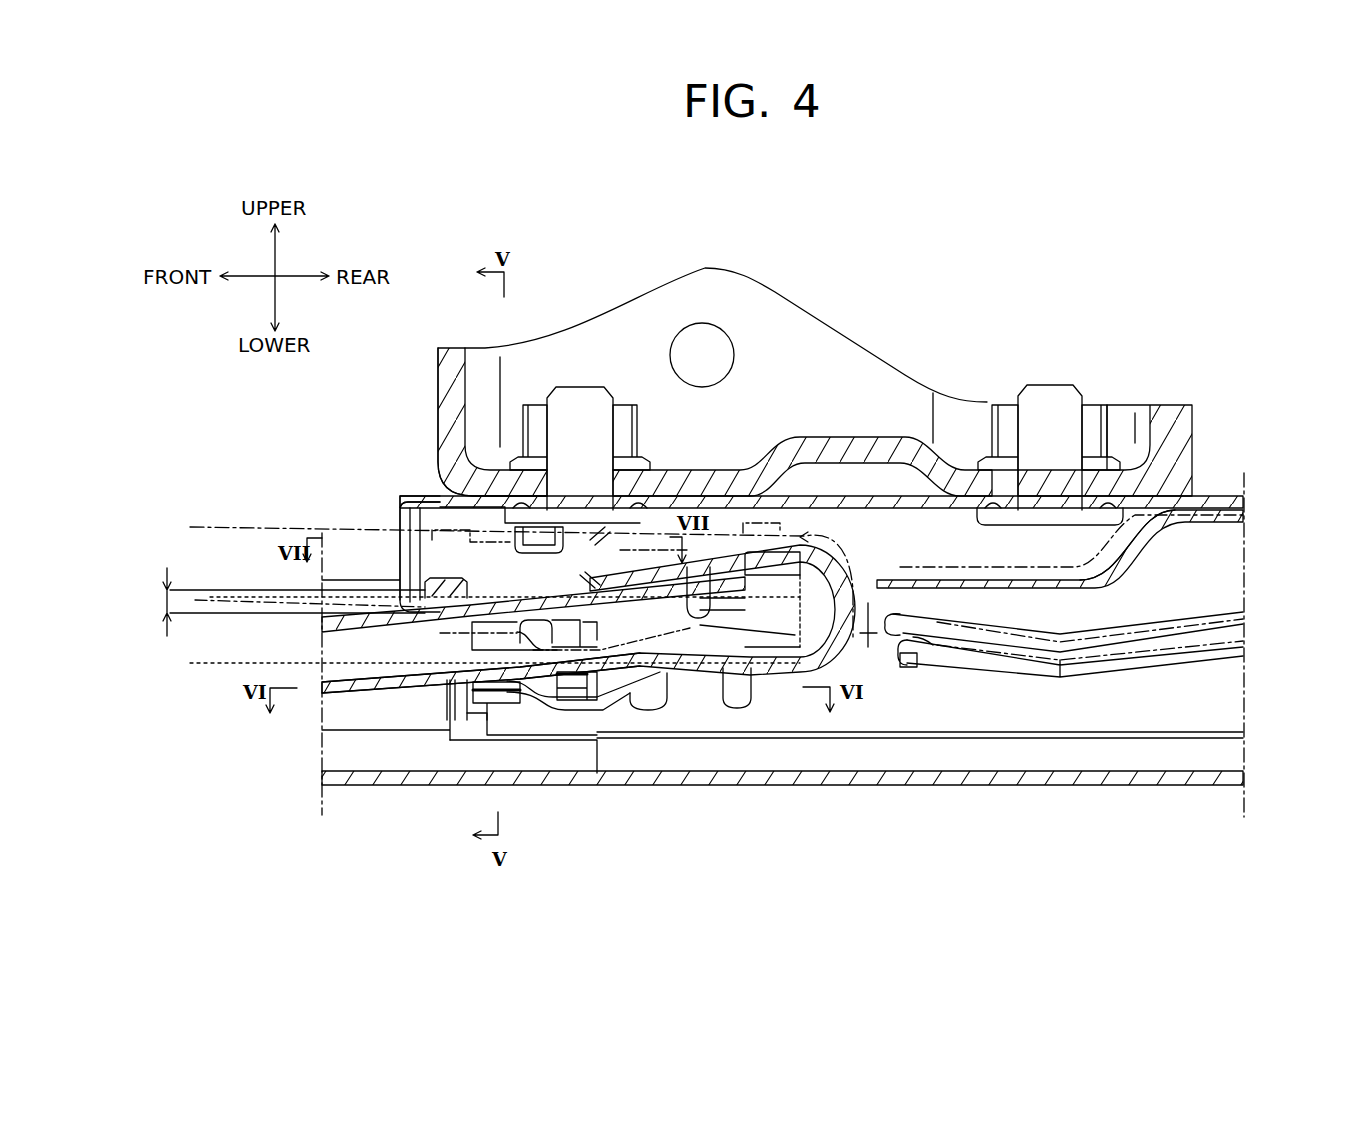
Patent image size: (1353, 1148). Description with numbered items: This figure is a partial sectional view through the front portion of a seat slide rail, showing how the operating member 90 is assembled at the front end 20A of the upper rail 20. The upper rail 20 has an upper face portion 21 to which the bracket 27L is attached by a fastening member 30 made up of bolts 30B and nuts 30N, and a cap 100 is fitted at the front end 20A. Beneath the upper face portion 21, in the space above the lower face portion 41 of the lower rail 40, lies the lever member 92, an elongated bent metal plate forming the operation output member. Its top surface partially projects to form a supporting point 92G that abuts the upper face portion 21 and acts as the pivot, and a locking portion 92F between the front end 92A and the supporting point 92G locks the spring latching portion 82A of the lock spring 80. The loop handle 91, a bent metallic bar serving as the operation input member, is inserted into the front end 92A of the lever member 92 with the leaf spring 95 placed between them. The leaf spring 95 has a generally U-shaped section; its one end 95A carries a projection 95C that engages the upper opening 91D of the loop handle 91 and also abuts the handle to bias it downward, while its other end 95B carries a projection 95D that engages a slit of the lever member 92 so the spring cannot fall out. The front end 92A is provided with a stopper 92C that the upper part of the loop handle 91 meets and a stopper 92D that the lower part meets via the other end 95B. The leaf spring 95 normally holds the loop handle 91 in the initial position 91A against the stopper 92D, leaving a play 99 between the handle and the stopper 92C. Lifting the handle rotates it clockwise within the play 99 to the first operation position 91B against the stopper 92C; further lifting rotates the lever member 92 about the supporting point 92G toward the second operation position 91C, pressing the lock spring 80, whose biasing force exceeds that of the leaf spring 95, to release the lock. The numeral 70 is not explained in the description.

The cap 100 is at (410, 496).
The front end 20A is at (437, 492).
The upper rail 20 is at (792, 403).
The upper face portion 21 is at (867, 494).
The bracket 27L is at (812, 352).
The fastening member 30 is at (834, 359).
The bolt 30B is at (581, 402).
The nut 30N is at (623, 413).
The lever member 92 is at (810, 624).
The front end 92A is at (455, 572).
The stopper 92C is at (398, 578).
The stopper 92D is at (448, 690).
The locking portion 92F is at (893, 668).
The supporting point 92G is at (1193, 510).
The leaf spring 95 is at (600, 643).
The one end 95A is at (643, 548).
The other end 95B is at (505, 703).
The projection 95C is at (717, 708).
The projection 95D is at (645, 710).
The operating member 90 is at (600, 643).
The holding device 70 is at (600, 643).
The loop handle 91 is at (519, 670).
The initial position 91A is at (377, 693).
The first operation position 91B is at (207, 663).
The second operation position 91C is at (233, 533).
The upper opening 91D is at (689, 618).
The play 99 is at (465, 602).
The lock spring 80 is at (1066, 722).
The spring latching portion 82A is at (905, 667).
The lower rail 40 is at (782, 786).
The lower face portion 41 is at (1100, 785).